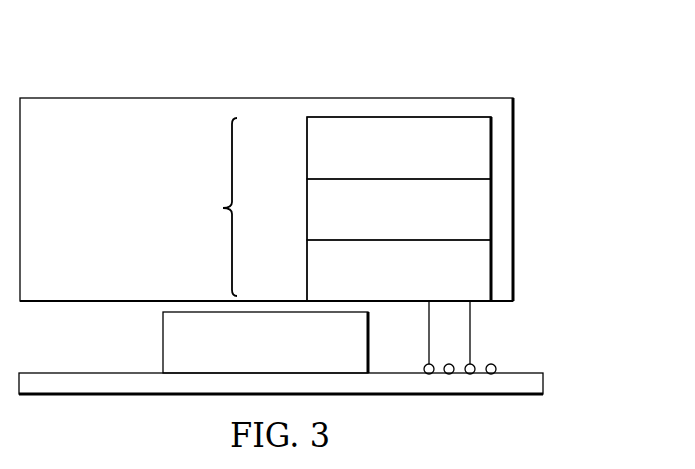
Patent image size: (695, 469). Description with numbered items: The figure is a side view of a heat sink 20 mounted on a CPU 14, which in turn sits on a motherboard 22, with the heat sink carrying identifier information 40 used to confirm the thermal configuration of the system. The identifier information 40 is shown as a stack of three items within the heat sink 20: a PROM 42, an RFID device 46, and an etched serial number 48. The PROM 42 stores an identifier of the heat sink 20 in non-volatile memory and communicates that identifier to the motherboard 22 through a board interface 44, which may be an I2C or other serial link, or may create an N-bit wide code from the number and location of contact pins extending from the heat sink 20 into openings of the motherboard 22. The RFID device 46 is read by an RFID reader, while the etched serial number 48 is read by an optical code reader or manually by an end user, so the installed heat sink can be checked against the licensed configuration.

The heat sink 20 is at (141, 95).
The identifier information 40 is at (282, 209).
The PROM 42 is at (313, 146).
The RFID device 46 is at (313, 209).
The etched serial number 48 is at (313, 271).
The CPU 14 is at (170, 343).
The board interface 44 is at (546, 335).
The motherboard 22 is at (533, 386).